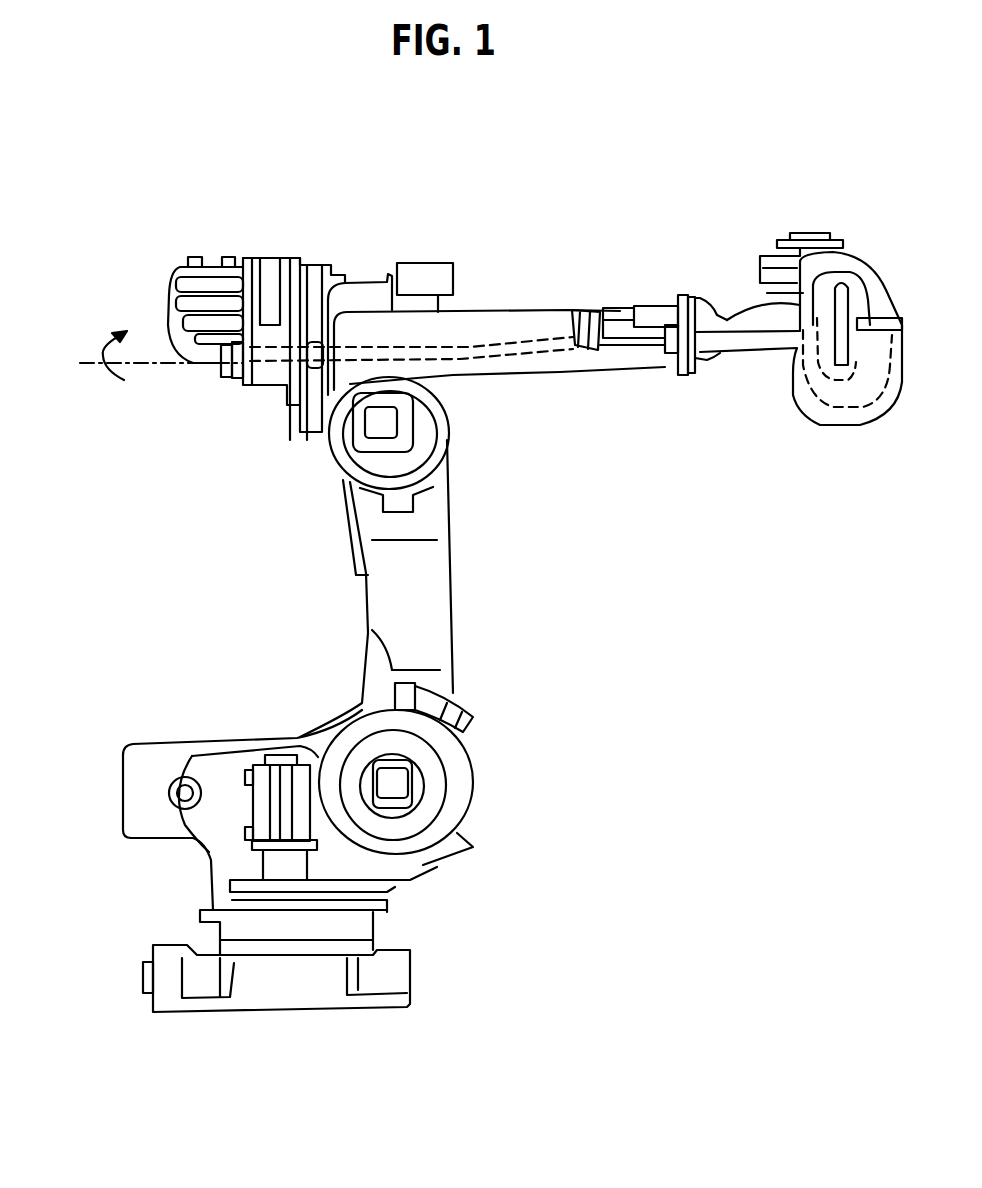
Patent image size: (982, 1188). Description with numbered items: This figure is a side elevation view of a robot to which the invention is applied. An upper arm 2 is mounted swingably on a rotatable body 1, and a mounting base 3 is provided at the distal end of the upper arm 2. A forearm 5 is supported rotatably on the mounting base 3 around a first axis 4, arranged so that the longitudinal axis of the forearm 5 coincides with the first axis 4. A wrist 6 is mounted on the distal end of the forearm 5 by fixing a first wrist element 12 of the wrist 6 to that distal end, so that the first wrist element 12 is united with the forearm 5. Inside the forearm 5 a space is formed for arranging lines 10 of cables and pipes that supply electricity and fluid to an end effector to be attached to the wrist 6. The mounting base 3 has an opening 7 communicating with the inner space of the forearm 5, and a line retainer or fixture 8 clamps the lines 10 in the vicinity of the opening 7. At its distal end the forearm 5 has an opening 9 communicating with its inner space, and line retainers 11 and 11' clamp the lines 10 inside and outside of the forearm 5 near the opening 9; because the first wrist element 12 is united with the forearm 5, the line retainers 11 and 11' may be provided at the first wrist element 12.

The rotatable body 1 is at (190, 860).
The upper arm 2 is at (452, 553).
The mounting base 3 is at (297, 410).
The first axis 4 is at (132, 355).
The forearm 5 is at (543, 373).
The wrist 6 is at (777, 424).
The opening 7 is at (226, 378).
The line retainer (fixture) 8 is at (222, 370).
The opening 9 is at (628, 308).
The lines 10 is at (463, 340).
The line retainer 11 is at (572, 282).
The line retainer 11' is at (661, 375).
The first wrist element 12 is at (697, 375).